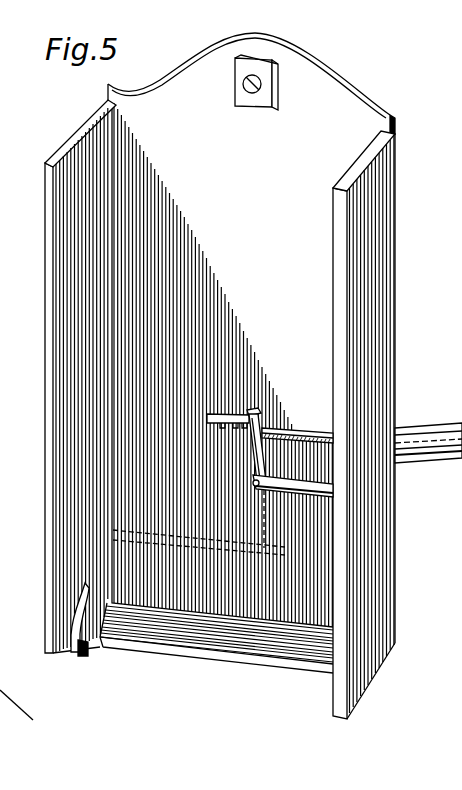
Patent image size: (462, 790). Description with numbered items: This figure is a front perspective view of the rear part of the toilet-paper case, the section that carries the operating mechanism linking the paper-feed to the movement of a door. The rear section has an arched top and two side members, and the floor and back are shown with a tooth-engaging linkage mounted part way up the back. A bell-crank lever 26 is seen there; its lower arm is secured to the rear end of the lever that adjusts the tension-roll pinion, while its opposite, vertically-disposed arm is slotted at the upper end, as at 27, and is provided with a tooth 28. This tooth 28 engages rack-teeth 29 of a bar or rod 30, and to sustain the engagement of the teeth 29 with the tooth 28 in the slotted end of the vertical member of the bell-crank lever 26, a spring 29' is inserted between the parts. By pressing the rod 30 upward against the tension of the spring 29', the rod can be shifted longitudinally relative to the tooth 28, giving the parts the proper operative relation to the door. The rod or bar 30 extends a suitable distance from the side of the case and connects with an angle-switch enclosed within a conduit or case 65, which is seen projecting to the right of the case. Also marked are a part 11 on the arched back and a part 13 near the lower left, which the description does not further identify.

The back plate with screw 11 is at (262, 89).
The hook 13 is at (68, 650).
The bell-crank lever 26 is at (270, 436).
The slotted upper end 27 is at (261, 416).
The tooth 28 is at (317, 490).
The rack-teeth 29 is at (297, 426).
The spring 29' is at (272, 394).
The rod or bar 30 is at (220, 413).
The conduit or case 65 is at (442, 463).